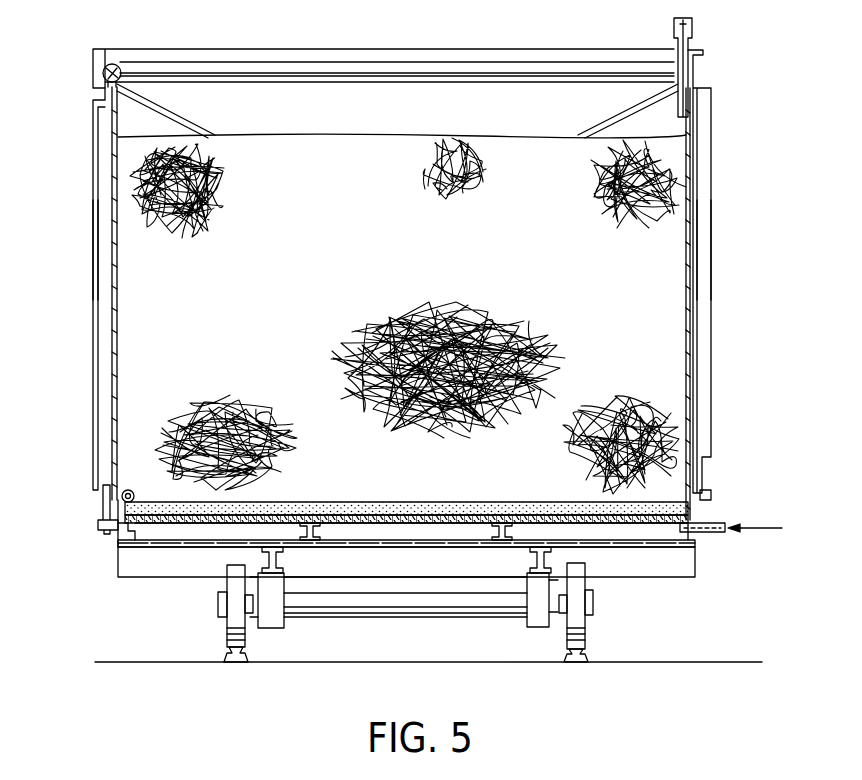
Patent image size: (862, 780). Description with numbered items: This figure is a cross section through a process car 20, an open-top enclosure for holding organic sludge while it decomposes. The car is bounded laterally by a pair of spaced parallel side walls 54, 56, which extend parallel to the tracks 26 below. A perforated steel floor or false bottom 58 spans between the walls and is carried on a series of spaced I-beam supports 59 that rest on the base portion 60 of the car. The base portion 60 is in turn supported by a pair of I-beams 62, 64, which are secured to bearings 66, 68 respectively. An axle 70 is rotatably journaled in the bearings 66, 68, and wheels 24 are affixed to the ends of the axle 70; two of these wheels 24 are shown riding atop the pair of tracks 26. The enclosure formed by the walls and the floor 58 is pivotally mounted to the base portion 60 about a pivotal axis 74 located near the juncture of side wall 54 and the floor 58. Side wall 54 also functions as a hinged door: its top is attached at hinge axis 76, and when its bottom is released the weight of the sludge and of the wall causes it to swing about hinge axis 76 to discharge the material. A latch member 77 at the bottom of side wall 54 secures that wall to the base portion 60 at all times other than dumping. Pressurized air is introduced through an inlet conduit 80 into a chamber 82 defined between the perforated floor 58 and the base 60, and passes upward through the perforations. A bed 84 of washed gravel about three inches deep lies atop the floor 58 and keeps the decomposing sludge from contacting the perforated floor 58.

The process car 20 is at (745, 130).
The wheels 24 is at (227, 630).
The tracks 26 is at (228, 651).
The side wall 54 is at (112, 346).
The side wall 56 is at (694, 318).
The perforated steel floor 58 is at (430, 513).
The I-beam supports 59 is at (318, 530).
The base portion 60 is at (143, 548).
The I-beam 62 is at (284, 560).
The I-beam 64 is at (532, 555).
The bearing 66 is at (284, 615).
The bearing 68 is at (537, 612).
The axle 70 is at (447, 603).
The pivotal axis 74 is at (123, 491).
The hinge axis 76 is at (103, 71).
The latch member 77 is at (98, 505).
The inlet conduit 80 is at (725, 523).
The chamber 82 is at (648, 533).
The bed of washed gravel 84 is at (337, 503).